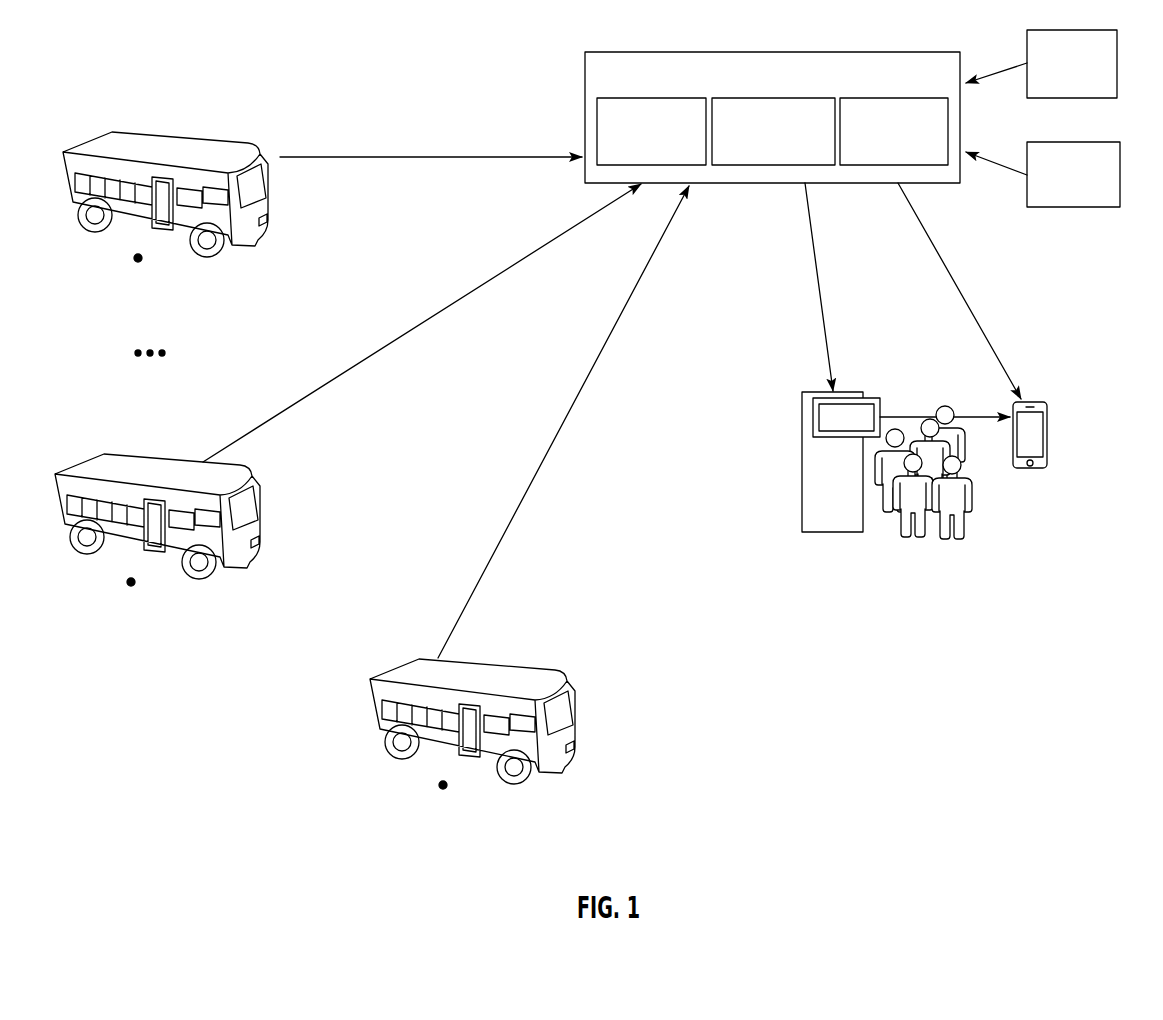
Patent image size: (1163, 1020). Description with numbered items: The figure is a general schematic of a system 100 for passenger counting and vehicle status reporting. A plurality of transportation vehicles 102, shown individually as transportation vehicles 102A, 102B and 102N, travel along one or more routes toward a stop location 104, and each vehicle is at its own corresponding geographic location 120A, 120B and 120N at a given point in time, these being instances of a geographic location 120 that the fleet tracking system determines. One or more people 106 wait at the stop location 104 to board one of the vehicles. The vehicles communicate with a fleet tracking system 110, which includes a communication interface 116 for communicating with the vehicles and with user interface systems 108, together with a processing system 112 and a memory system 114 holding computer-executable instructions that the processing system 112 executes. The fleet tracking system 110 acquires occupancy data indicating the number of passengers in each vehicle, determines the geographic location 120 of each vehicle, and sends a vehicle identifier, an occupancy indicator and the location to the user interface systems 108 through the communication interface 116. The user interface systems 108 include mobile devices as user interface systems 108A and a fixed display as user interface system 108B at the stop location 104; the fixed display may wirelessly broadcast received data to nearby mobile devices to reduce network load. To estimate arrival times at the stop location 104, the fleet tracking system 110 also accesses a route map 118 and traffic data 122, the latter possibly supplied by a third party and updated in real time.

The system 100 is at (445, 106).
The transportation vehicles 102 is at (128, 94).
The transportation vehicle 102A is at (560, 682).
The transportation vehicle 102B is at (248, 473).
The transportation vehicle 102N is at (257, 150).
The stop location 104 is at (850, 522).
The people 106 is at (960, 527).
The user interface systems 108 is at (1036, 375).
The user interface systems 108A is at (1040, 443).
The user interface systems 108B is at (857, 398).
The fleet tracking system 110 is at (935, 52).
The processing system 112 is at (727, 165).
The memory system 114 is at (948, 138).
The communication interface 116 is at (597, 132).
The route map 118 is at (1093, 98).
The geographic location 120 is at (175, 667).
The geographic location 120A is at (443, 789).
The geographic location 120B is at (131, 586).
The geographic location 120N is at (138, 262).
The traffic data 122 is at (1093, 207).